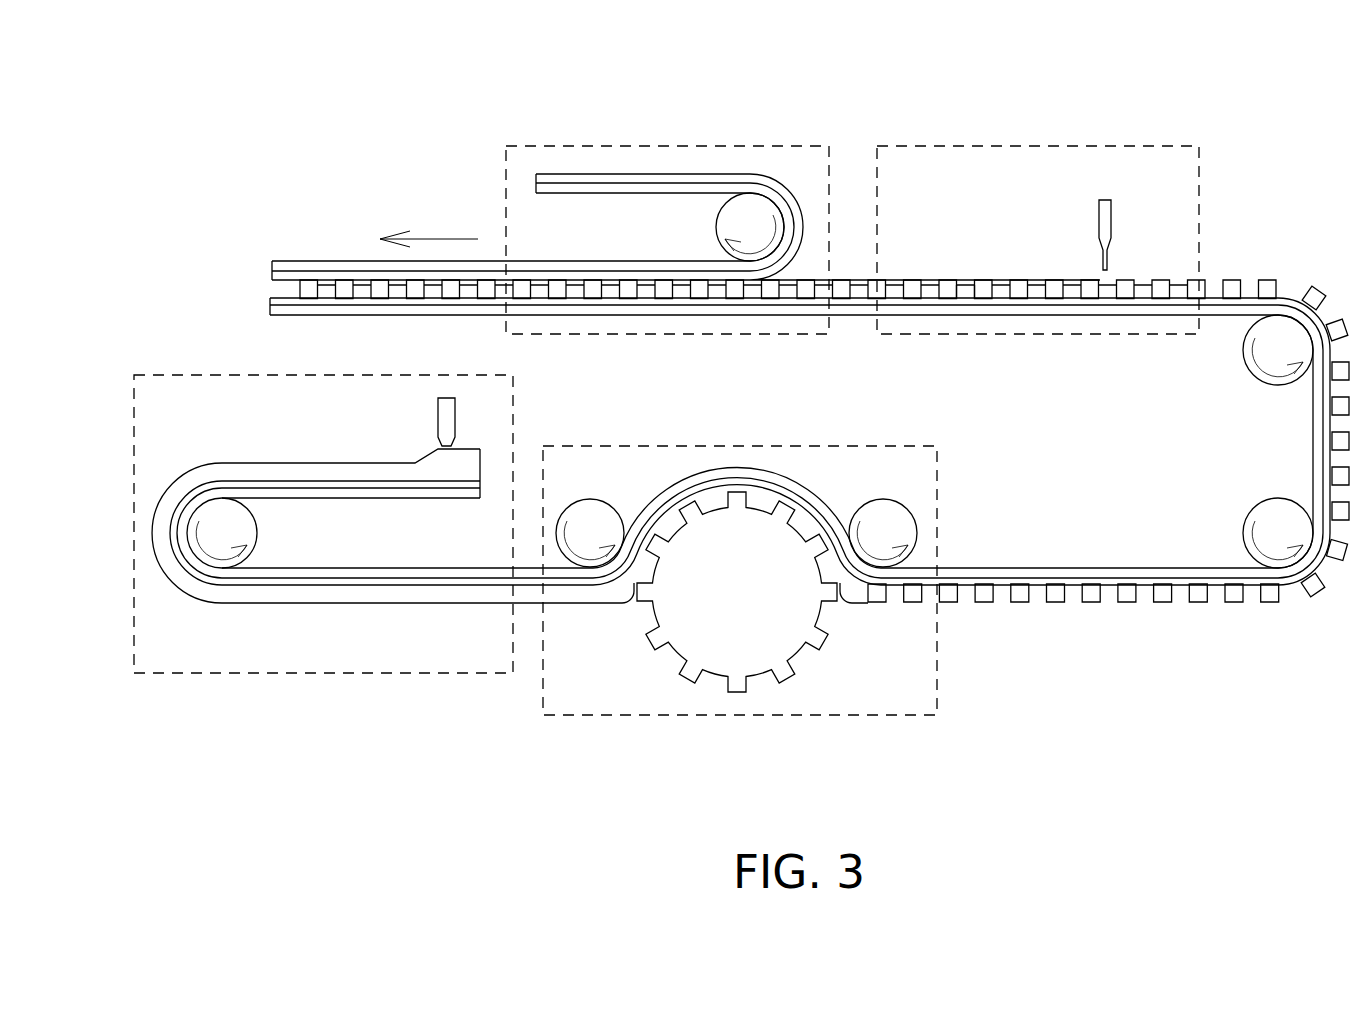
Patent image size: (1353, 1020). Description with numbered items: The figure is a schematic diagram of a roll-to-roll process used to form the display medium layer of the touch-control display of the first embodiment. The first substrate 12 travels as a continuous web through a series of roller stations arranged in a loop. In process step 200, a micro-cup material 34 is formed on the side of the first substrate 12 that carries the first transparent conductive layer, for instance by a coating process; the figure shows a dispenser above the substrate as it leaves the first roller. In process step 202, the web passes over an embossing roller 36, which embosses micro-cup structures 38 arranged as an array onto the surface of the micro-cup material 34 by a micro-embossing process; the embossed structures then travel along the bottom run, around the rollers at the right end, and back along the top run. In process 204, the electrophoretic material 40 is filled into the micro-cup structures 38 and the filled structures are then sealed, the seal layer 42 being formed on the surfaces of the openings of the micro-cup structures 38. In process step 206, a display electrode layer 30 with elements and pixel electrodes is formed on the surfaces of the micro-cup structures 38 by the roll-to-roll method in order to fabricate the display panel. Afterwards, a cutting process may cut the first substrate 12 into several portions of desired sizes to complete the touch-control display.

The first substrate 12 is at (352, 585).
The display electrode layer 30 is at (630, 278).
The micro-cup material 34 is at (268, 603).
The embossing roller 36 is at (784, 640).
The micro-cup structures 38 is at (1020, 603).
The electrophoretic material 40 is at (1041, 290).
The seal layer 42 is at (967, 283).
The process step 200 is at (170, 375).
The process step 202 is at (737, 446).
The process 204 is at (1035, 146).
The process step 206 is at (665, 146).